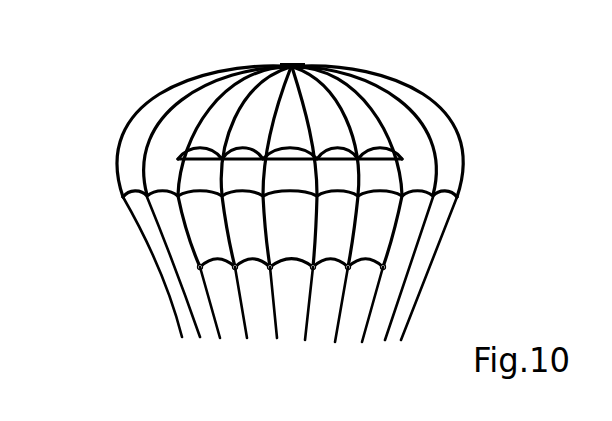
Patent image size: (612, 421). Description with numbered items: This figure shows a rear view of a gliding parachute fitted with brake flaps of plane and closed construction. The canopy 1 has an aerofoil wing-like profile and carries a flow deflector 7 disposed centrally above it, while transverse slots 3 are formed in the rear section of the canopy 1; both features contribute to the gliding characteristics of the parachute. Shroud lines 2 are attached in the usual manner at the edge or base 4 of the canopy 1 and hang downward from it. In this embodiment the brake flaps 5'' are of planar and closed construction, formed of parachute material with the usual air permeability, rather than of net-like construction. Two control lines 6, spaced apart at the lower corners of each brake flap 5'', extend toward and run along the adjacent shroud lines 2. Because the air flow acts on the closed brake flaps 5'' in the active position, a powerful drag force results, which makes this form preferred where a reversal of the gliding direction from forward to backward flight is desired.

The canopy 1 is at (133, 125).
The shroud lines 2 is at (197, 337).
The transverse slots 3 is at (378, 156).
The base of the canopy 4 is at (143, 200).
The brake flaps of planar and closed construction 5'' is at (284, 264).
The control lines 6 is at (222, 332).
The flow deflector 7 is at (292, 64).